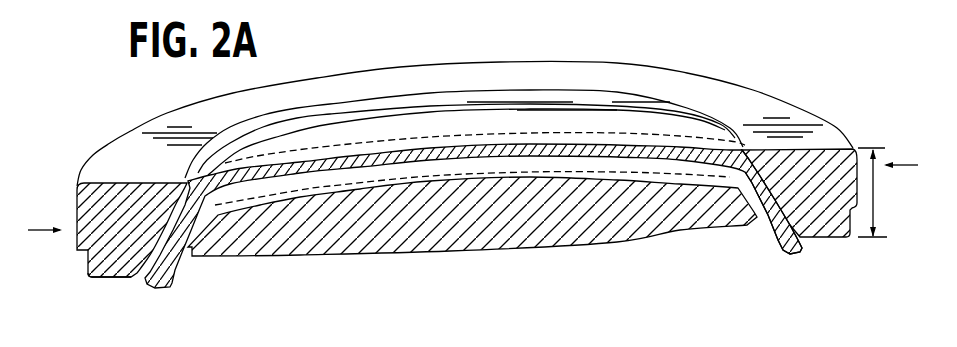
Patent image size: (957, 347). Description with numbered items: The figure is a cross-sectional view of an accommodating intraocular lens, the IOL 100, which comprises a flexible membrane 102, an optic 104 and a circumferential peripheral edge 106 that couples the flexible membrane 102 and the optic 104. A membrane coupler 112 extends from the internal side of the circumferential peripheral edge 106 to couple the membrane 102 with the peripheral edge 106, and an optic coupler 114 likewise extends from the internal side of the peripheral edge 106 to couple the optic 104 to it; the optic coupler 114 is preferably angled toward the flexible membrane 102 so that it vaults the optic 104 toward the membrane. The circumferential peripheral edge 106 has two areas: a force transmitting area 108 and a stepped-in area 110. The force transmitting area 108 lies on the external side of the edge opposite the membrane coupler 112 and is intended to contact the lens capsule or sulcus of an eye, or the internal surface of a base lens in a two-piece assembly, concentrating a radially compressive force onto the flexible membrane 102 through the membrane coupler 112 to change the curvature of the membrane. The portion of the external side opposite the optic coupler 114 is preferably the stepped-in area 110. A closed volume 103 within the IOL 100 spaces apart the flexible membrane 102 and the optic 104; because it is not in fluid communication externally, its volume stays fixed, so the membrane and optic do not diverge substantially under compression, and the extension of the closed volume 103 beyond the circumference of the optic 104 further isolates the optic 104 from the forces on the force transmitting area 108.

The IOL 100 is at (112, 99).
The flexible membrane 102 is at (493, 118).
The closed volume 103 is at (403, 177).
The optic 104 is at (478, 247).
The circumferential peripheral edge 106 is at (890, 192).
The force transmitting area 108 is at (75, 222).
The stepped-in area 110 is at (87, 260).
The membrane coupler 112 is at (780, 137).
The optic coupler 114 is at (787, 240).